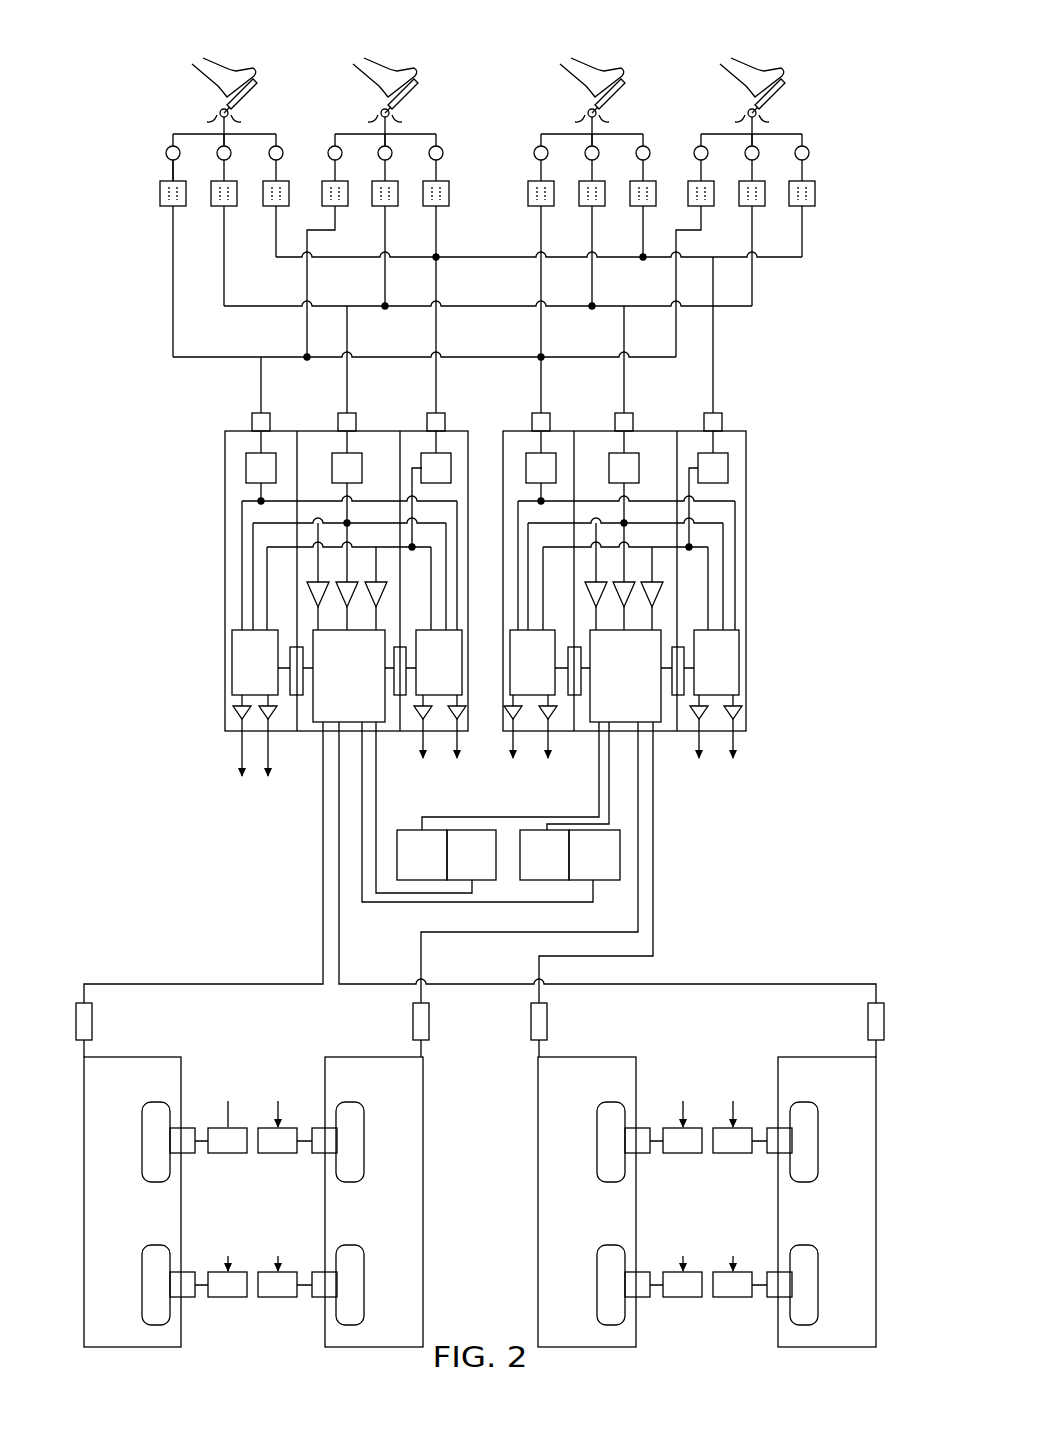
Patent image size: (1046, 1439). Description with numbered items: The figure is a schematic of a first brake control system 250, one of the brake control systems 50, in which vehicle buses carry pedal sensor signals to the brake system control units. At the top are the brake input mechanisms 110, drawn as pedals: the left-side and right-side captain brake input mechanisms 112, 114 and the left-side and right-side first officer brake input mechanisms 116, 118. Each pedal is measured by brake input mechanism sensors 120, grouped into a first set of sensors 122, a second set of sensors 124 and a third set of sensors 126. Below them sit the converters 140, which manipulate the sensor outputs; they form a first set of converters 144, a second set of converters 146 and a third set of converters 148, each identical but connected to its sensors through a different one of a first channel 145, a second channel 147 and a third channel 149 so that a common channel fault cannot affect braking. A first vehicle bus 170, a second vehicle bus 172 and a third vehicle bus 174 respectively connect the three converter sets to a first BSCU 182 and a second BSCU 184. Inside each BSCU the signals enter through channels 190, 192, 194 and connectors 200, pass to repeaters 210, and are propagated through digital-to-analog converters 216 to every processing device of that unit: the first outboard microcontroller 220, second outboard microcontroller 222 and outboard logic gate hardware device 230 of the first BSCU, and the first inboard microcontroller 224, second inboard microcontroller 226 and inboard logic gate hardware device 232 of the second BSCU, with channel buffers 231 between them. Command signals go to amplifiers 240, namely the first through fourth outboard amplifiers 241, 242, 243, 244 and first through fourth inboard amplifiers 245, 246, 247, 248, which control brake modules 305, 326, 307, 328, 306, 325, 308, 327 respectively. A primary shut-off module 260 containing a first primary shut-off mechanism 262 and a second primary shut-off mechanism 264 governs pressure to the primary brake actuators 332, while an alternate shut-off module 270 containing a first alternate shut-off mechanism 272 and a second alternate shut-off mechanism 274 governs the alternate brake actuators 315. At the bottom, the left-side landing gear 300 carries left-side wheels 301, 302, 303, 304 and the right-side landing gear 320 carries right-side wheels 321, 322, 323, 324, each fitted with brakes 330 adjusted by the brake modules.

The brake control systems 50 is at (81, 38).
The brake input mechanisms 110 is at (124, 105).
The left-side captain brake input mechanism 112 is at (257, 93).
The right-side captain brake input mechanism 114 is at (419, 93).
The left-side first officer brake input mechanism 116 is at (625, 93).
The right-side first officer brake input mechanism 118 is at (785, 93).
The brake input mechanism sensors 120 is at (124, 153).
The first set of sensors 122 is at (167, 146).
The second set of sensors 124 is at (233, 150).
The third set of sensors 126 is at (281, 148).
The converters 140 is at (124, 199).
The first set of converters 144 is at (181, 212).
The first channel 145 is at (163, 207).
The second set of converters 146 is at (232, 212).
The second channel 147 is at (173, 212).
The third set of converters 148 is at (274, 212).
The third channel 149 is at (175, 180).
The first vehicle bus 170 is at (162, 314).
The second vehicle bus 172 is at (761, 313).
The third vehicle bus 174 is at (813, 263).
The first BSCU 182 is at (186, 401).
The second BSCU 184 is at (781, 404).
The channel 190 is at (280, 419).
The channel 192 is at (369, 419).
The channel 194 is at (461, 419).
The connectors 200 is at (240, 422).
The repeaters 210 is at (240, 468).
The digital-to-analog converters 216 is at (303, 594).
The first outboard microcontroller 220 is at (239, 676).
The second outboard microcontroller 222 is at (423, 676).
The first inboard microcontroller 224 is at (516, 676).
The second inboard microcontroller 226 is at (700, 676).
The outboard logic gate hardware device 230 is at (333, 676).
The channel buffers 231 is at (396, 640).
The inboard logic gate hardware device 232 is at (609, 676).
The amplifiers 240 is at (210, 714).
The first outboard amplifier 241 is at (232, 719).
The second outboard amplifier 242 is at (277, 719).
The third outboard amplifier 243 is at (417, 719).
The fourth outboard amplifier 244 is at (464, 716).
The first inboard amplifier 245 is at (509, 719).
The second inboard amplifier 246 is at (553, 719).
The third inboard amplifier 247 is at (696, 719).
The fourth inboard amplifier 248 is at (738, 719).
The first brake control system 250 is at (157, 62).
The primary shut-off module 260 is at (393, 855).
The first primary shut-off mechanism 262 is at (456, 871).
The second primary shut-off mechanism 264 is at (406, 871).
The alternate shut-off module 270 is at (624, 860).
The first alternate shut-off mechanism 272 is at (578, 871).
The second alternate shut-off mechanism 274 is at (528, 871).
The left-side landing gear 300 is at (220, 1026).
The left-side wheel 301 is at (152, 1102).
The left-side wheel 302 is at (350, 1102).
The left-side wheel 303 is at (152, 1245).
The left-side wheel 304 is at (350, 1245).
The brake module 305 is at (200, 1108).
The brake module 306 is at (314, 1093).
The brake module 307 is at (200, 1299).
The brake module 308 is at (305, 1299).
The alternate brake actuators 315 is at (885, 1020).
The right-side landing gear 320 is at (713, 1044).
The right-side wheel 321 is at (607, 1102).
The right-side wheel 322 is at (805, 1102).
The right-side wheel 323 is at (607, 1245).
The right-side wheel 324 is at (805, 1245).
The brake module 325 is at (655, 1108).
The brake module 326 is at (769, 1093).
The brake module 327 is at (655, 1299).
The brake module 328 is at (760, 1299).
The brakes 330 is at (182, 1155).
The primary brake actuators 332 is at (228, 1155).